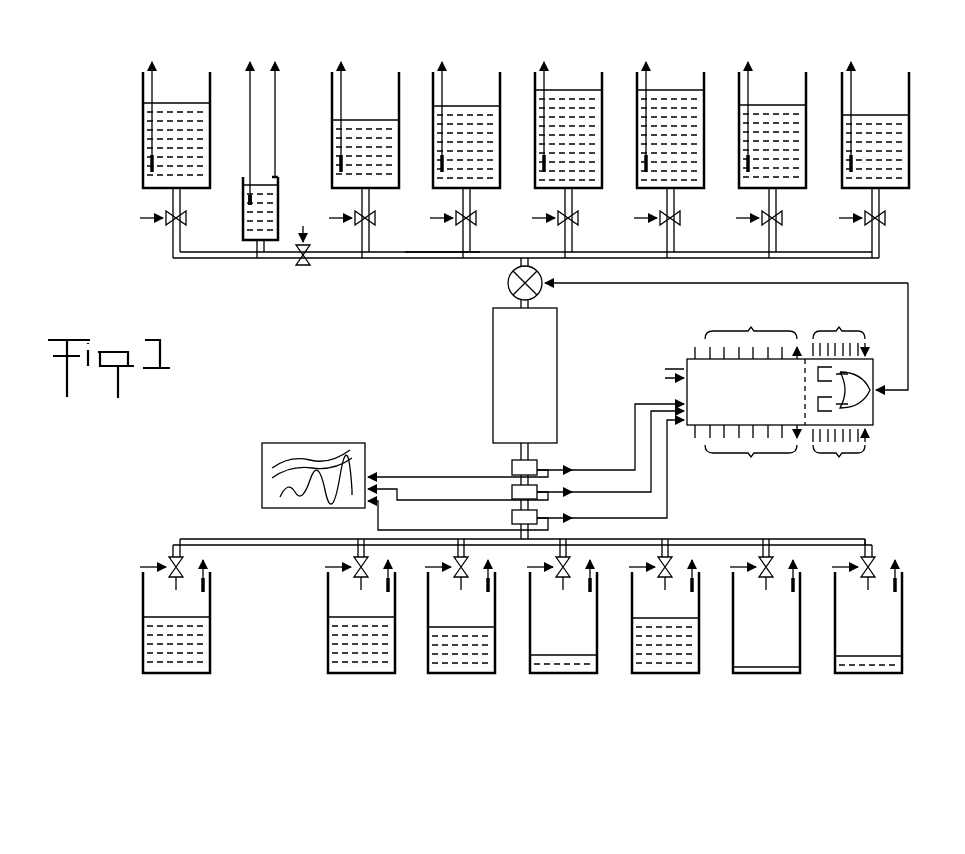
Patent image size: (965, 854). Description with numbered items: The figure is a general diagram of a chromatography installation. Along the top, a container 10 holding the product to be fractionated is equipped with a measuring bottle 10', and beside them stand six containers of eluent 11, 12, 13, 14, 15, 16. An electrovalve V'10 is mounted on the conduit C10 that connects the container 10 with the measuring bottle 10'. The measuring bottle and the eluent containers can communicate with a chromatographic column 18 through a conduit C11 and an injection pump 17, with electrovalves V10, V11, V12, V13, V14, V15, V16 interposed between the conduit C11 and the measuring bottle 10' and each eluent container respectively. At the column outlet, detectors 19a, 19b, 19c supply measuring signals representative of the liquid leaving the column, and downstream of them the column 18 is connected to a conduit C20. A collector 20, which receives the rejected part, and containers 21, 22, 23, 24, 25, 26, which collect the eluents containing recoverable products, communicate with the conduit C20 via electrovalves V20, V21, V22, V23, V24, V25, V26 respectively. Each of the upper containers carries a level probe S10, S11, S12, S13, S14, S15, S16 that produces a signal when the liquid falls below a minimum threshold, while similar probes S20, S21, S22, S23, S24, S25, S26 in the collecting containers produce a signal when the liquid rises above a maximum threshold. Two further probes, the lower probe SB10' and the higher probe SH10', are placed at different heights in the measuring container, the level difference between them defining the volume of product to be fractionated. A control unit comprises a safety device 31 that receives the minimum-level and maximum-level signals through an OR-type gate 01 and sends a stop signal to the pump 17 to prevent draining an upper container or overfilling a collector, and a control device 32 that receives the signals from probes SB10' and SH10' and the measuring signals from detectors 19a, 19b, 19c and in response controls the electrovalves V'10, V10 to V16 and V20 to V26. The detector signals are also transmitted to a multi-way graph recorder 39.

The container 10 is at (151, 165).
The measuring bottle 10' is at (257, 149).
The container of eluent 11 is at (332, 110).
The container of eluent 12 is at (433, 92).
The container of eluent 13 is at (535, 126).
The container of eluent 14 is at (637, 126).
The container of eluent 15 is at (739, 126).
The container of eluent 16 is at (842, 126).
The injection pump 17 is at (506, 285).
The chromatographic column 18 is at (533, 385).
The detector 19a is at (512, 470).
The detector 19b is at (512, 494).
The detector 19c is at (512, 519).
The collector 20 is at (210, 652).
The collector container 21 is at (328, 641).
The collector container 22 is at (428, 661).
The collector container 23 is at (530, 652).
The collector container 24 is at (632, 661).
The collector container 25 is at (733, 661).
The collector container 26 is at (835, 661).
The safety device 31 is at (866, 392).
The control device 32 is at (750, 392).
The multi-way graph recorder 39 is at (300, 443).
The OR-type gate 01 is at (844, 394).
The conduit C10 is at (212, 258).
The conduit C11 is at (420, 258).
The conduit C20 is at (716, 539).
The electrovalve V10 is at (315, 254).
The electrovalve V'10 is at (171, 211).
The electrovalve V11 is at (377, 216).
The electrovalve V12 is at (478, 216).
The electrovalve V13 is at (580, 216).
The electrovalve V14 is at (682, 216).
The electrovalve V15 is at (784, 216).
The electrovalve V16 is at (887, 216).
The electrovalve V20 is at (143, 572).
The electrovalve V21 is at (334, 572).
The electrovalve V22 is at (443, 572).
The electrovalve V23 is at (543, 572).
The electrovalve V24 is at (645, 572).
The electrovalve V25 is at (745, 572).
The electrovalve V26 is at (847, 572).
The level probe S10 is at (143, 165).
The level probe S11 is at (332, 165).
The level probe S12 is at (433, 166).
The level probe S13 is at (535, 166).
The level probe S14 is at (637, 166).
The level probe S15 is at (739, 166).
The level probe S16 is at (842, 166).
The higher probe SH10' is at (297, 185).
The lower probe SB10' is at (221, 216).
The level probe S20 is at (205, 590).
The level probe S21 is at (390, 590).
The level probe S22 is at (490, 590).
The level probe S23 is at (592, 590).
The level probe S24 is at (694, 590).
The level probe S25 is at (795, 590).
The level probe S26 is at (897, 590).